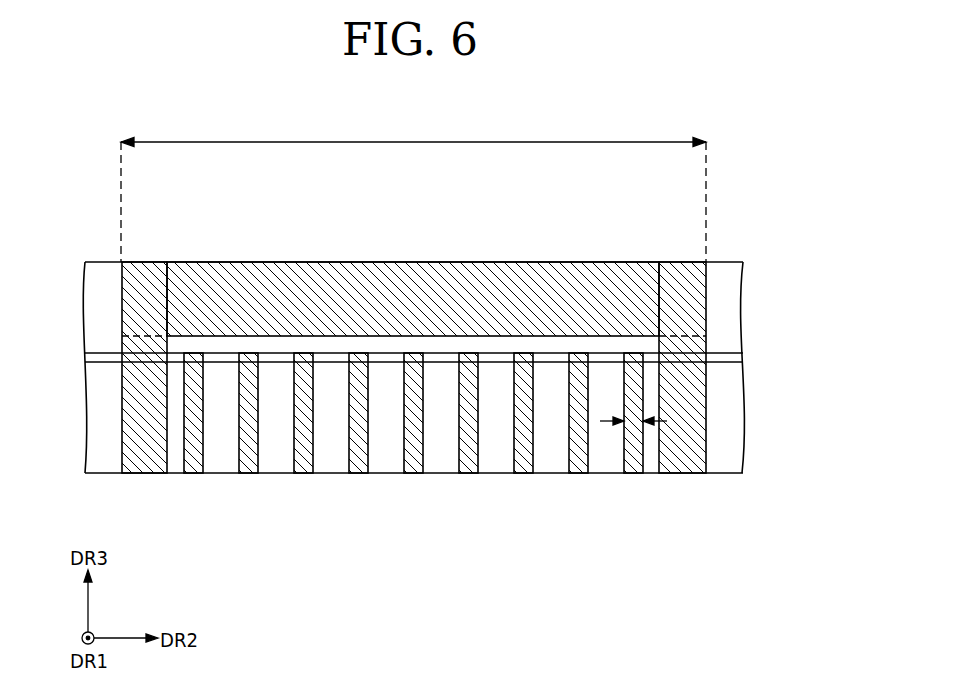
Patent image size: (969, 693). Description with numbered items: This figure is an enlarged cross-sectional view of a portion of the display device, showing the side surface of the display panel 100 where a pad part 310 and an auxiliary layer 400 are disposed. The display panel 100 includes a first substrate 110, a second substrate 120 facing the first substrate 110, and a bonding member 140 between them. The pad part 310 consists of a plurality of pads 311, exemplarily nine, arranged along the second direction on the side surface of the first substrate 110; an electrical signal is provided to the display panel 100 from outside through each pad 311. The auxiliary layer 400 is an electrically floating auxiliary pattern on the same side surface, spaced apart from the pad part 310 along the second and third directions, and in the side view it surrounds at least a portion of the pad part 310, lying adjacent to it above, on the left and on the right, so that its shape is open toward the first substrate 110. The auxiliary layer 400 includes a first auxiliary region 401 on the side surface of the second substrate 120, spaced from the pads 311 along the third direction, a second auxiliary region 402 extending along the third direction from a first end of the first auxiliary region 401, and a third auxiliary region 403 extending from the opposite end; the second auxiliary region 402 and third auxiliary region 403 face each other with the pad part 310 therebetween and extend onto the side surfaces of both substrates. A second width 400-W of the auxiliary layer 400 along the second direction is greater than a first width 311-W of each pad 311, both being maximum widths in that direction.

The display panel 100 is at (487, 314).
The first substrate 110 is at (456, 417).
The second substrate 120 is at (475, 314).
The bonding member 140 is at (733, 357).
The pad part 310 is at (414, 467).
The pad 311 is at (657, 537).
The first width 311-W is at (637, 423).
The auxiliary layer 400 is at (414, 314).
The second width 400-W is at (413, 189).
The first auxiliary region 401 is at (417, 276).
The second auxiliary region 402 is at (144, 375).
The third auxiliary region 403 is at (678, 336).